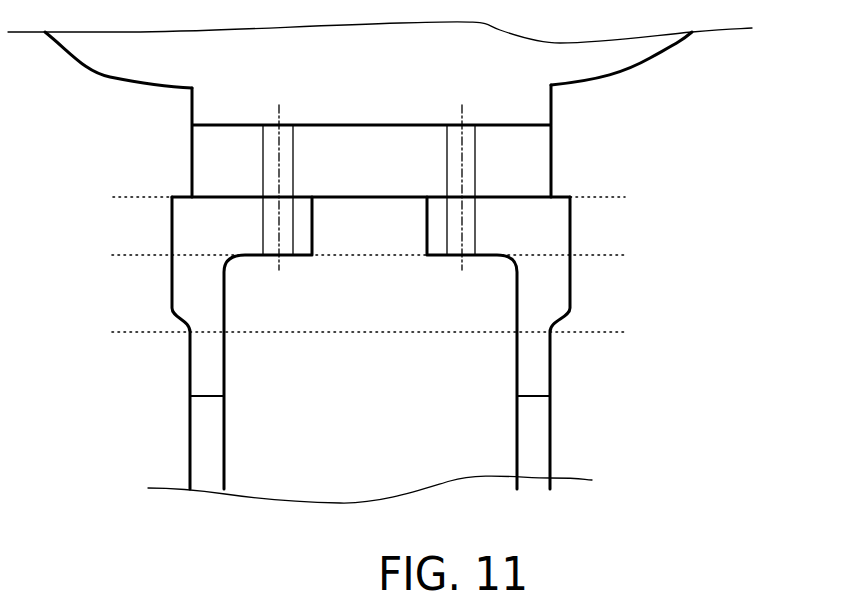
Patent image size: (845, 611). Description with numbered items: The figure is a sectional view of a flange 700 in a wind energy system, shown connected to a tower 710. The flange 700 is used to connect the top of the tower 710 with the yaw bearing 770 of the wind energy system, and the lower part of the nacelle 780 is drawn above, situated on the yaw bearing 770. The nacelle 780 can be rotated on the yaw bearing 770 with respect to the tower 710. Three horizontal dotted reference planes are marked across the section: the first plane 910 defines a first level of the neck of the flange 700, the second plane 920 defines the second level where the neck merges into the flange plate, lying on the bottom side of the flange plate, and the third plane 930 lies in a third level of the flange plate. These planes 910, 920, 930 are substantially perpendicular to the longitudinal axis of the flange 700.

The flange 700 is at (658, 297).
The tower 710 is at (532, 464).
The yaw bearing 770 is at (505, 173).
The nacelle 780 is at (567, 62).
The first plane 910 is at (325, 326).
The second plane 920 is at (323, 256).
The third plane 930 is at (323, 186).